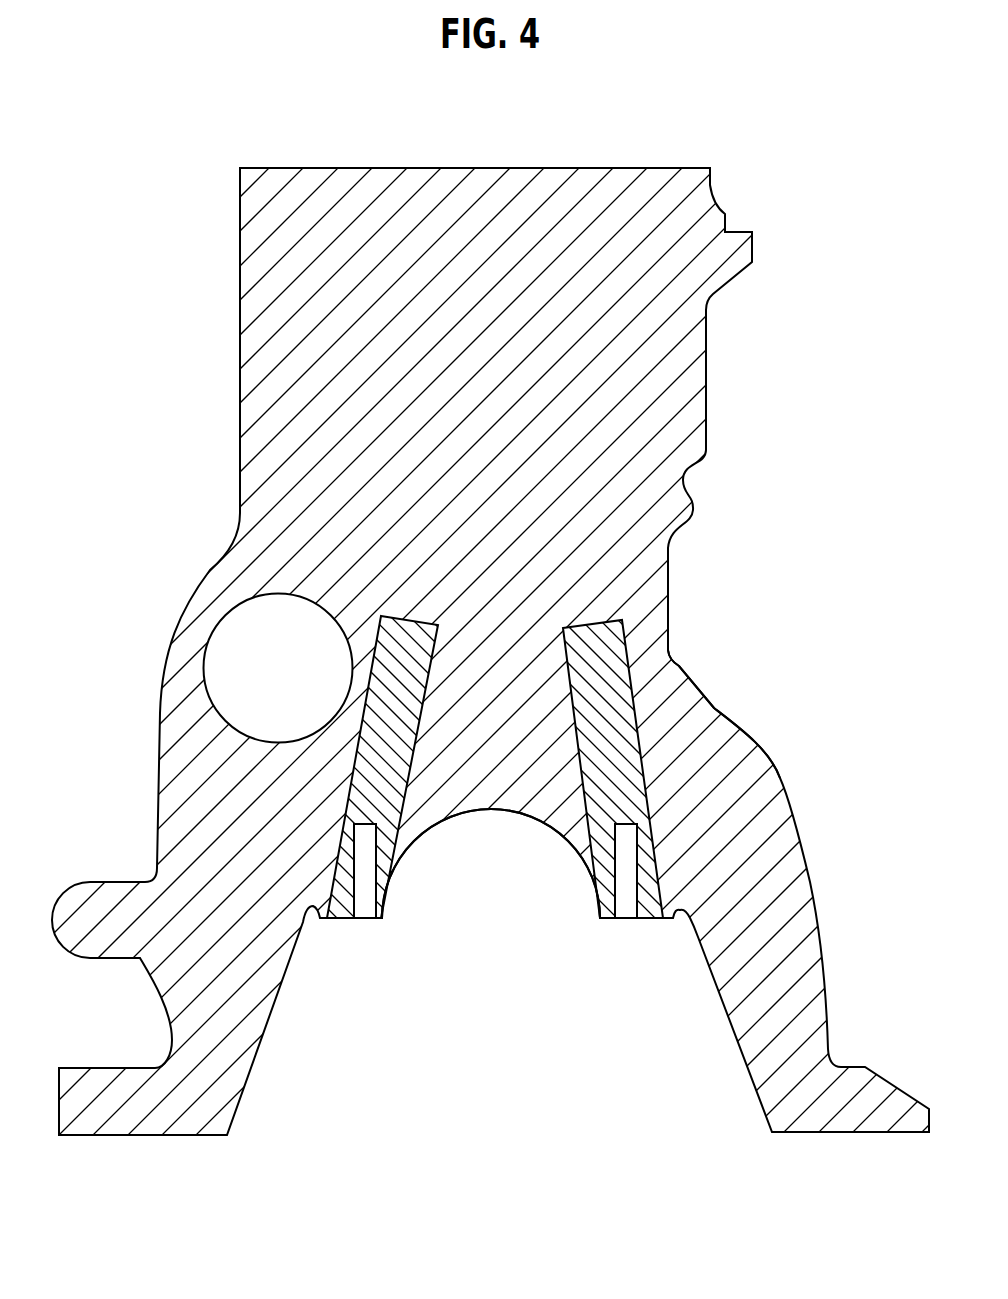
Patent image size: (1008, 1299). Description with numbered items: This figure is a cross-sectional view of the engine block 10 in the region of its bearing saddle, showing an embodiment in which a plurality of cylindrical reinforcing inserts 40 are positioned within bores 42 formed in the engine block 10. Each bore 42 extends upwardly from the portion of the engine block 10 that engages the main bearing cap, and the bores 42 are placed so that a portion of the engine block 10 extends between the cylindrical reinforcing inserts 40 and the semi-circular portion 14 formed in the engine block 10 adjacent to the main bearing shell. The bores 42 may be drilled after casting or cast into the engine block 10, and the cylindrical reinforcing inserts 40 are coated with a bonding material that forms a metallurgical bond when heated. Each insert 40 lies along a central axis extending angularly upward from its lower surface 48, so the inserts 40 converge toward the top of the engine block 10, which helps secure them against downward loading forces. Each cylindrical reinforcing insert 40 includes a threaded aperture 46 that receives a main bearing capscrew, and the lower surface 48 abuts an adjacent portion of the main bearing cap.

The engine block 10 is at (263, 305).
The semi-circular portion 14 is at (500, 815).
The cylindrical reinforcing insert 40 is at (672, 655).
The bore 42 is at (358, 782).
The threaded aperture 46 is at (370, 920).
The lower surface 48 is at (640, 918).